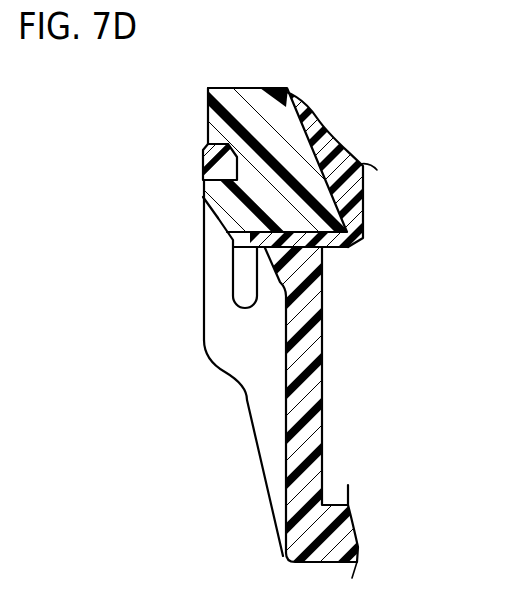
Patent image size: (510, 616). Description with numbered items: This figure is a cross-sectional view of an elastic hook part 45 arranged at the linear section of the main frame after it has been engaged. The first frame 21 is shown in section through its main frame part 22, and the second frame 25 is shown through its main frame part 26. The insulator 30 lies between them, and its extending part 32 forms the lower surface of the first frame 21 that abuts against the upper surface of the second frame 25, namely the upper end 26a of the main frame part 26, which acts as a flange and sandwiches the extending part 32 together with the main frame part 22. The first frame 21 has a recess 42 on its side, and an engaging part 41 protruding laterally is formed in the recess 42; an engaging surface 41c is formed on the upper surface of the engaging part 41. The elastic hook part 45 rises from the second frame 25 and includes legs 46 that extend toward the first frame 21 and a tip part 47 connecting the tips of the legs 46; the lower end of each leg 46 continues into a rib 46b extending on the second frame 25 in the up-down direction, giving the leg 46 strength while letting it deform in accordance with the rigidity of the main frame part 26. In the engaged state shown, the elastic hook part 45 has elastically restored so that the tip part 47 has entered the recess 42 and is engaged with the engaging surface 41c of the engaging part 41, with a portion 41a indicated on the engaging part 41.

The first frame 21 is at (248, 97).
The main frame part 22 is at (255, 308).
The second frame 25 is at (300, 462).
The main frame part 26 is at (255, 308).
The upper end 26a is at (305, 249).
The insulator 30 is at (312, 130).
The extending part 32 is at (330, 245).
The engaging part 41 is at (221, 197).
The holding member lower portion 41a is at (220, 230).
The engaging surface 41c is at (210, 172).
The recess 42 is at (221, 139).
The elastic hook part 45 is at (200, 274).
The leg 46 is at (218, 298).
The rib 46b is at (266, 347).
The tip part 47 is at (205, 155).